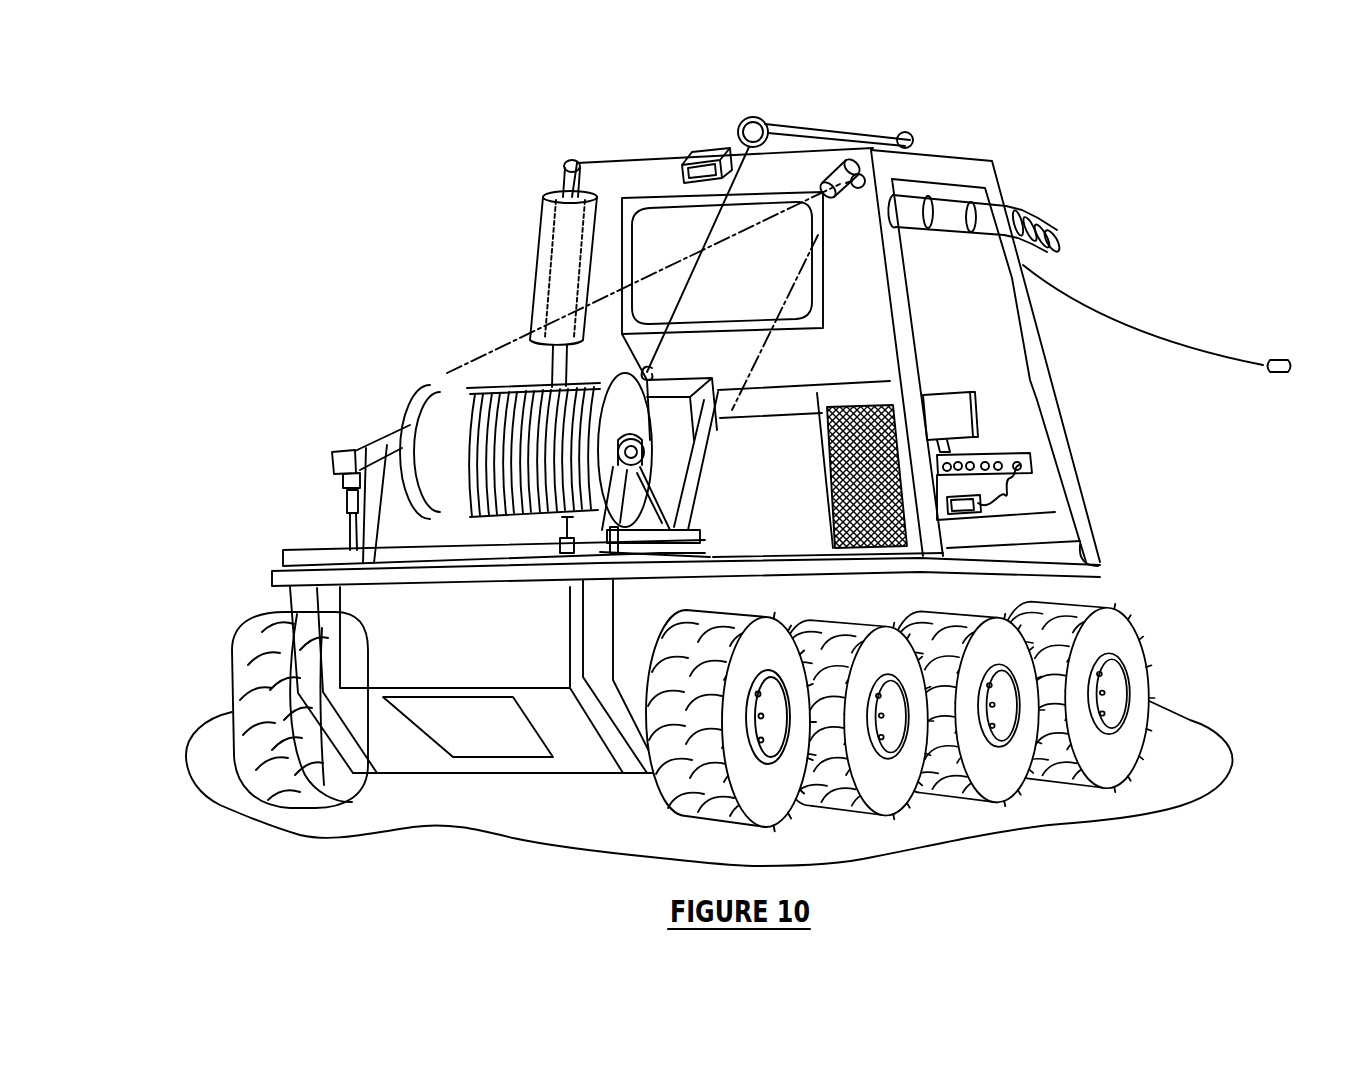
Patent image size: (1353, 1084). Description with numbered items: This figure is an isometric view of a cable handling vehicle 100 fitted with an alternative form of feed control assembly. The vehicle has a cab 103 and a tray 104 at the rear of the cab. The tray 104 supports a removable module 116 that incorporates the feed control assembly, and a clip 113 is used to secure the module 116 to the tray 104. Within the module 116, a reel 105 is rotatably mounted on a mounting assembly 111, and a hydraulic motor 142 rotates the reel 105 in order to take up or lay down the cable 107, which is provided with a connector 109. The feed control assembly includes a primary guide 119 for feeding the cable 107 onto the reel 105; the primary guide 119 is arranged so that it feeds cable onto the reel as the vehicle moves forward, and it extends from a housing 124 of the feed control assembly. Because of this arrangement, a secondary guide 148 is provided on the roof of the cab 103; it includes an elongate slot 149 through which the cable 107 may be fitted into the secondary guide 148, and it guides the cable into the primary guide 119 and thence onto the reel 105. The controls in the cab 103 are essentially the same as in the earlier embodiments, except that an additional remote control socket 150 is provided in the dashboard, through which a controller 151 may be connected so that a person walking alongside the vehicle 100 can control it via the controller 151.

The cable handling vehicle 100 is at (1052, 182).
The cab 103 is at (968, 170).
The tray 104 is at (673, 568).
The reel 105 is at (473, 397).
The cable 107 is at (1130, 328).
The connector 109 is at (1277, 360).
The mounting assembly 111 is at (353, 523).
The clip 113 is at (585, 540).
The removable module 116 is at (703, 497).
The primary guide 119 is at (647, 372).
The housing 124 is at (673, 410).
The hydraulic motor 142 is at (342, 460).
The secondary guide 148 is at (787, 122).
The elongate slot 149 is at (845, 132).
The remote control socket 150 is at (1027, 470).
The controller 151 is at (963, 503).